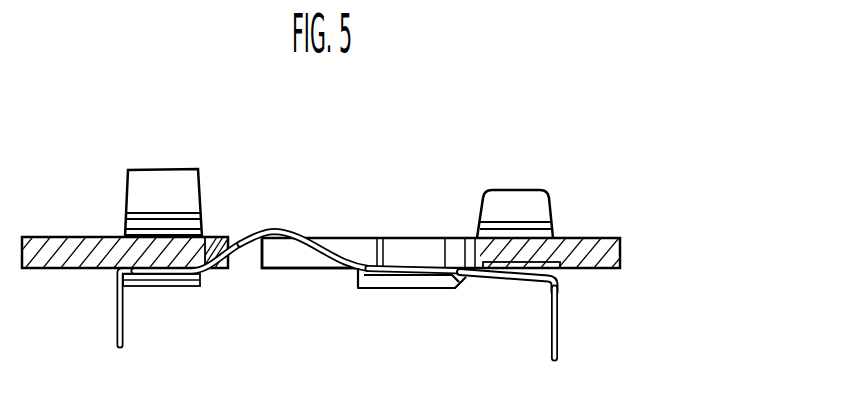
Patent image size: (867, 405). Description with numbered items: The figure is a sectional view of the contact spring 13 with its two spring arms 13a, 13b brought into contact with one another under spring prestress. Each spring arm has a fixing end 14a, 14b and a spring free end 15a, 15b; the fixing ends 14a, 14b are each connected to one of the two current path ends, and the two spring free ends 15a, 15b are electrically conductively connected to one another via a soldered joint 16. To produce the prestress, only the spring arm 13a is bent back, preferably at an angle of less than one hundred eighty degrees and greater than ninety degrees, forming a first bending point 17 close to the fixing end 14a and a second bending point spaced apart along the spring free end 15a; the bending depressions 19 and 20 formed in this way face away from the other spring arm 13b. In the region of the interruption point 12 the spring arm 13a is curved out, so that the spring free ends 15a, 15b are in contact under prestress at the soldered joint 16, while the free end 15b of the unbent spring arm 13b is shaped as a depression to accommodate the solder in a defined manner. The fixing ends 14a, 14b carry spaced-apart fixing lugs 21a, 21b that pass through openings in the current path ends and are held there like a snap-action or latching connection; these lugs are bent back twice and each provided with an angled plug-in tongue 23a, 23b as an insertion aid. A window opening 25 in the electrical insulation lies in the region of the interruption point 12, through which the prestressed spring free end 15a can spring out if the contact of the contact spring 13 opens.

The interruption point 12 is at (248, 264).
The contact spring 13 is at (337, 231).
The spring arm 13a is at (170, 287).
The spring arm 13b is at (486, 283).
The fixing end 14a is at (136, 288).
The fixing end 14b is at (526, 284).
The spring free end 15a is at (249, 250).
The spring free end 15b is at (394, 287).
The soldered joint 16 is at (427, 266).
The first bending point 17 is at (207, 280).
The bending depression 19 is at (380, 217).
The bending depression 20 is at (378, 238).
The fixing lug 21a is at (125, 198).
The fixing lug 21b is at (598, 226).
The plug-in tongue 23a is at (160, 170).
The plug-in tongue 23b is at (512, 190).
The window opening 25 is at (467, 266).